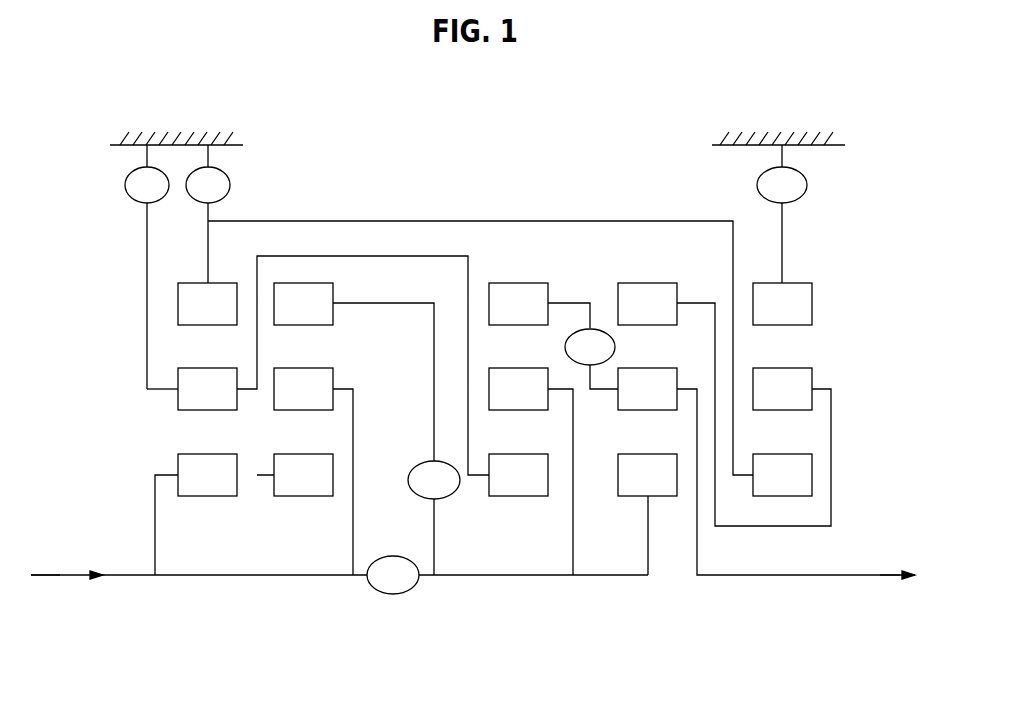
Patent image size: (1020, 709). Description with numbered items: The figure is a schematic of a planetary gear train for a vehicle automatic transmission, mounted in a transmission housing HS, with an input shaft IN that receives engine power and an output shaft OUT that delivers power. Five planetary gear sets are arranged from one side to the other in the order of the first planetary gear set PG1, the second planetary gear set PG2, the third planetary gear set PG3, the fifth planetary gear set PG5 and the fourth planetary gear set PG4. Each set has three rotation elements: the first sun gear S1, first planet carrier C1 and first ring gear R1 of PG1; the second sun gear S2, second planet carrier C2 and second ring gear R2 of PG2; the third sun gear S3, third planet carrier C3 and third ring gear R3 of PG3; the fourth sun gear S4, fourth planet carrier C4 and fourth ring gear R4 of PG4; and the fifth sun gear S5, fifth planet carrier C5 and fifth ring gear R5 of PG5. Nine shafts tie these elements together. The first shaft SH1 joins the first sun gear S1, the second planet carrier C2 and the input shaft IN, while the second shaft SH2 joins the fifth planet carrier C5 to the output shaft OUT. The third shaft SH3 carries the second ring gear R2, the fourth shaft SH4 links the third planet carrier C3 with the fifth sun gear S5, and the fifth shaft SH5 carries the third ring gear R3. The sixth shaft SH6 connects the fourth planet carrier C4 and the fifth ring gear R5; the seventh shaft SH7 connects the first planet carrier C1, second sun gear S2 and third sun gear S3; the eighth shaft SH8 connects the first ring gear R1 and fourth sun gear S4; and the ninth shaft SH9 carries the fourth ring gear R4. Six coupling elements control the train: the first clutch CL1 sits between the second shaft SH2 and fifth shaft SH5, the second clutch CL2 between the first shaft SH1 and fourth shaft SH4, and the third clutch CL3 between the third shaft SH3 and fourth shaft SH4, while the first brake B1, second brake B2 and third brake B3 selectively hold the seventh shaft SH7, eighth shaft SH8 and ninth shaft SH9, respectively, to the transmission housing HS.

The transmission housing HS is at (191, 132).
The first brake B1 is at (147, 267).
The second brake B2 is at (208, 214).
The third brake B3 is at (782, 174).
The first clutch CL1 is at (590, 347).
The second clutch CL2 is at (393, 575).
The third clutch CL3 is at (434, 480).
The first planetary gear set PG1 is at (197, 502).
The second planetary gear set PG2 is at (316, 502).
The third planetary gear set PG3 is at (498, 502).
The fourth planetary gear set PG4 is at (795, 502).
The fifth planetary gear set PG5 is at (634, 502).
The first shaft SH1 is at (240, 575).
The second shaft SH2 is at (750, 575).
The third shaft SH3 is at (390, 303).
The fourth shaft SH4 is at (540, 575).
The fifth shaft SH5 is at (568, 303).
The sixth shaft SH6 is at (832, 457).
The seventh shaft SH7 is at (147, 278).
The eighth shaft SH8 is at (320, 221).
The ninth shaft SH9 is at (782, 236).
The first ring gear R1 is at (207, 304).
The second ring gear R2 is at (303, 304).
The third ring gear R3 is at (518, 304).
The fourth ring gear R4 is at (782, 304).
The fifth ring gear R5 is at (647, 304).
The first planet carrier C1 is at (207, 389).
The second planet carrier C2 is at (303, 389).
The third planet carrier C3 is at (518, 389).
The fourth planet carrier C4 is at (782, 389).
The fifth planet carrier C5 is at (647, 389).
The first sun gear S1 is at (207, 475).
The second sun gear S2 is at (303, 475).
The third sun gear S3 is at (518, 475).
The fourth sun gear S4 is at (782, 475).
The fifth sun gear S5 is at (647, 475).
The input shaft IN is at (50, 575).
The output shaft OUT is at (870, 575).